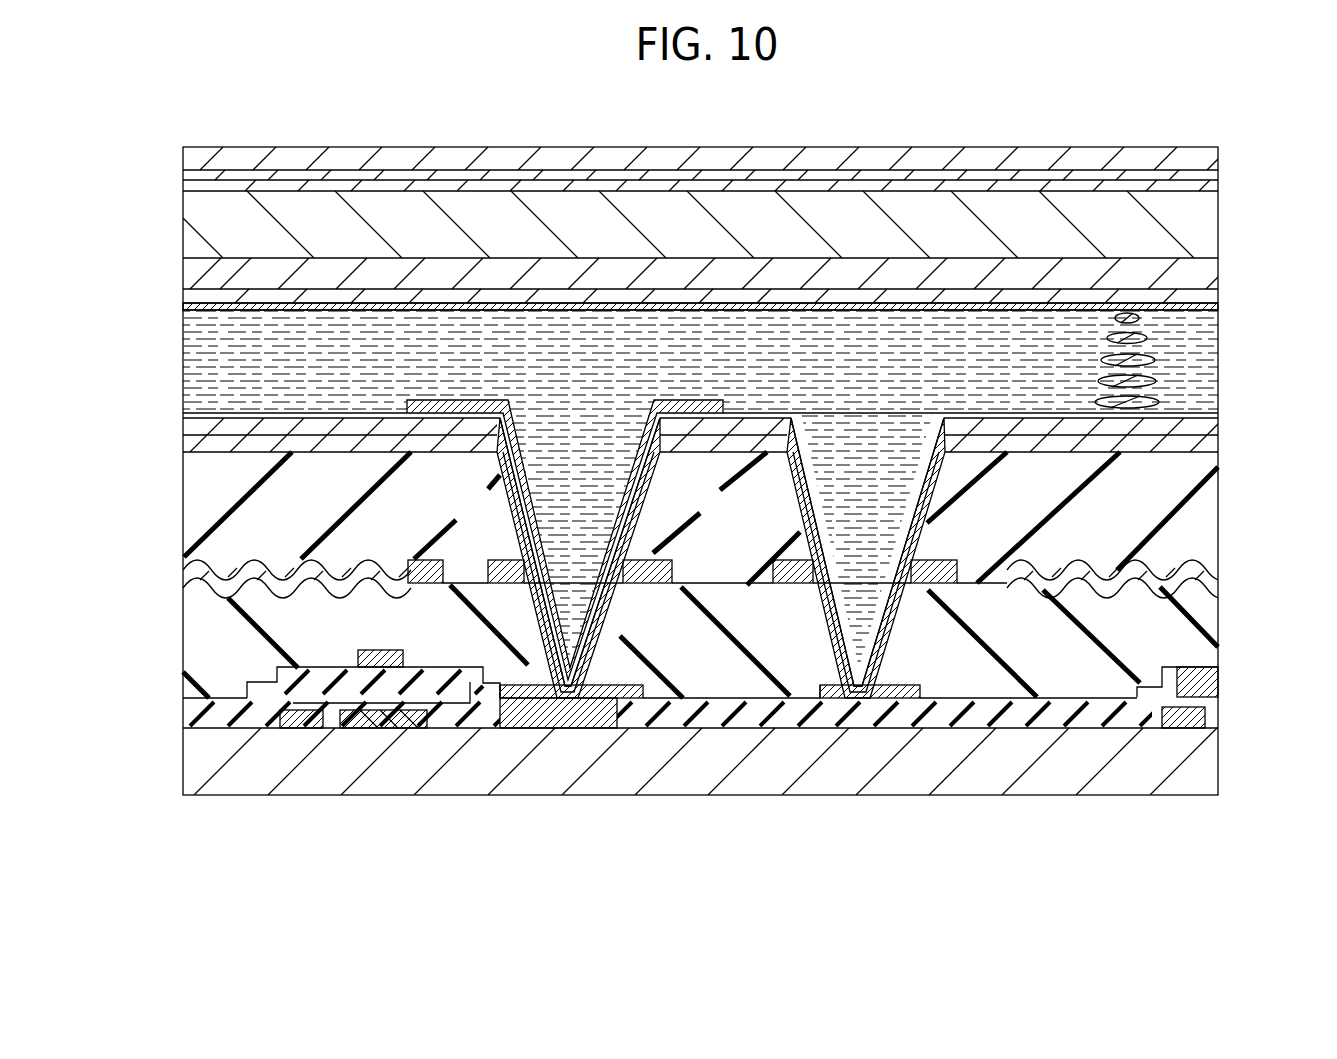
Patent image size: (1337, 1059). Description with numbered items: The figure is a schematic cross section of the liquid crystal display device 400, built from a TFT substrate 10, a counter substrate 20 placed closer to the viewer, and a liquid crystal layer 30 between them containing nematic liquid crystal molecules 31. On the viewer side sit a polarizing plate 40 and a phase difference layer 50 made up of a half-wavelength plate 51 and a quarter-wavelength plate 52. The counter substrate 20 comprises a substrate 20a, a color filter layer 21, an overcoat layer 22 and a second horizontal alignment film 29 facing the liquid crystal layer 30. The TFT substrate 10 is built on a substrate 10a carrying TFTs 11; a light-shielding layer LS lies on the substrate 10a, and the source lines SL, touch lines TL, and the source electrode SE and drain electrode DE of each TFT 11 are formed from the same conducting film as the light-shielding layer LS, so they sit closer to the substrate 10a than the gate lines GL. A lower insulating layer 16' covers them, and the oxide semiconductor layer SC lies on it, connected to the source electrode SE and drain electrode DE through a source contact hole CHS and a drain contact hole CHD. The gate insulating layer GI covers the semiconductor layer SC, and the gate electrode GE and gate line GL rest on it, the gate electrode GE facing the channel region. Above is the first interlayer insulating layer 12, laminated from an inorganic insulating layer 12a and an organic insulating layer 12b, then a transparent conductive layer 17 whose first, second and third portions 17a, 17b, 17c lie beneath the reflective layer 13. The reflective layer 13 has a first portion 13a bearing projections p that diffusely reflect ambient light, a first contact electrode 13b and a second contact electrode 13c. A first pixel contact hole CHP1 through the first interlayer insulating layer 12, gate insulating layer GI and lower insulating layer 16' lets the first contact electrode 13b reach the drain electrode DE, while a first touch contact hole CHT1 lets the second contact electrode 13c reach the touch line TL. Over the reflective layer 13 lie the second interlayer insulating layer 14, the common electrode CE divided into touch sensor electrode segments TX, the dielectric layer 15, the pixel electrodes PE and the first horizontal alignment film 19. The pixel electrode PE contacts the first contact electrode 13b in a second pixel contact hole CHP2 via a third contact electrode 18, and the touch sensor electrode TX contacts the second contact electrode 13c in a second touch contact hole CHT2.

The liquid crystal display device 400 is at (1243, 110).
The polarizing plate 40 is at (724, 169).
The phase difference layer 50 is at (756, 169).
The half-wavelength plate 51 is at (1220, 168).
The quarter-wavelength plate 52 is at (730, 183).
The counter substrate 20 is at (704, 263).
The substrate 20a is at (1220, 217).
The color filter layer 21 is at (1220, 266).
The overcoat layer 22 is at (1220, 294).
The second horizontal alignment film 29 is at (1220, 311).
The liquid crystal layer 30 is at (699, 489).
The liquid crystal molecule 31 is at (1156, 356).
The first horizontal alignment film 19 is at (1216, 413).
The common electrode CE is at (731, 392).
The touch sensor electrode TX is at (731, 392).
The pixel electrode PE is at (440, 399).
The dielectric layer 15 is at (731, 515).
The second interlayer insulating layer 14 is at (1210, 519).
The first pixel contact hole CHP1 is at (582, 492).
The second pixel contact hole CHP2 is at (573, 651).
The first touch contact hole CHT1 is at (865, 487).
The second touch contact hole CHT2 is at (857, 651).
The reflective layer 13 is at (709, 536).
The first portion 13a is at (282, 560).
The first contact electrode 13b is at (493, 558).
The second contact electrode 13c is at (773, 553).
The projection p is at (249, 554).
The first interlayer insulating layer 12 is at (760, 655).
The inorganic insulating layer 12a is at (1212, 689).
The organic insulating layer 12b is at (1176, 624).
The TFT substrate 10 is at (728, 613).
The substrate 10a is at (1210, 759).
The TFT 11 is at (388, 738).
The source line SL is at (1194, 720).
The source electrode SE is at (301, 719).
The drain electrode DE is at (586, 698).
The gate electrode GE is at (377, 639).
The gate line GL is at (372, 651).
The gate insulating layer GI is at (438, 700).
The semiconductor layer SC is at (349, 702).
The light-shielding layer LS is at (373, 730).
The source contact hole CHS is at (303, 702).
The drain contact hole CHD is at (459, 702).
The transparent conductive layer 17 is at (515, 738).
The first portion 17a is at (247, 582).
The second portion 17b is at (515, 700).
The third portion 17c is at (796, 700).
The third contact electrode 18 is at (642, 698).
The lower insulating layer 16' is at (718, 784).
The touch line TL is at (850, 698).